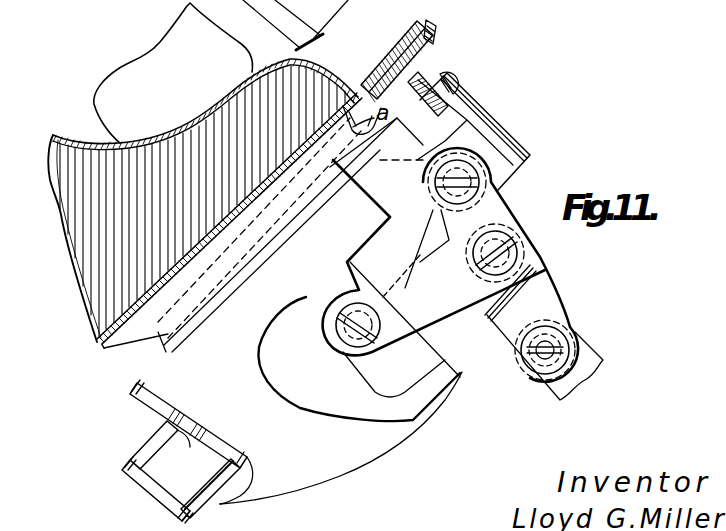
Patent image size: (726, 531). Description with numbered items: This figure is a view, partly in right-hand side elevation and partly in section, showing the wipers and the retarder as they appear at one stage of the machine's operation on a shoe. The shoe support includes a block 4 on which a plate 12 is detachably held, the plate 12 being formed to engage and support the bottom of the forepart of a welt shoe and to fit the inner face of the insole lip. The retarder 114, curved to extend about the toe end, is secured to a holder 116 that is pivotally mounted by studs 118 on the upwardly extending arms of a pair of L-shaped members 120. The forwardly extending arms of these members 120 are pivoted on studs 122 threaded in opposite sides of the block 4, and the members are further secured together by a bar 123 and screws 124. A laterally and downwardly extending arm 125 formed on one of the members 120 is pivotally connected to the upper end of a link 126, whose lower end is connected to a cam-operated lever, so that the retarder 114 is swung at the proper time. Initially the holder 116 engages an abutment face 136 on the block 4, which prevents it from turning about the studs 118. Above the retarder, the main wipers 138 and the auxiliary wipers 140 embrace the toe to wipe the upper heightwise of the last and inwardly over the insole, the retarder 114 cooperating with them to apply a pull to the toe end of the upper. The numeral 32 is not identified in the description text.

The block 4 is at (395, 0).
The plate 12 is at (155, 305).
The housing 32 is at (204, 42).
The retarder 114 is at (418, 77).
The holder 116 is at (508, 142).
The studs 118 is at (463, 188).
The L-shaped members 120 is at (451, 298).
The studs 122 is at (350, 336).
The bar 123 is at (503, 222).
The screws 124 is at (515, 256).
The arm 125 is at (537, 291).
The link 126 is at (583, 358).
The abutment face 136 is at (430, 117).
The main wipers 138 is at (390, 56).
The auxiliary wipers 140 is at (436, 42).